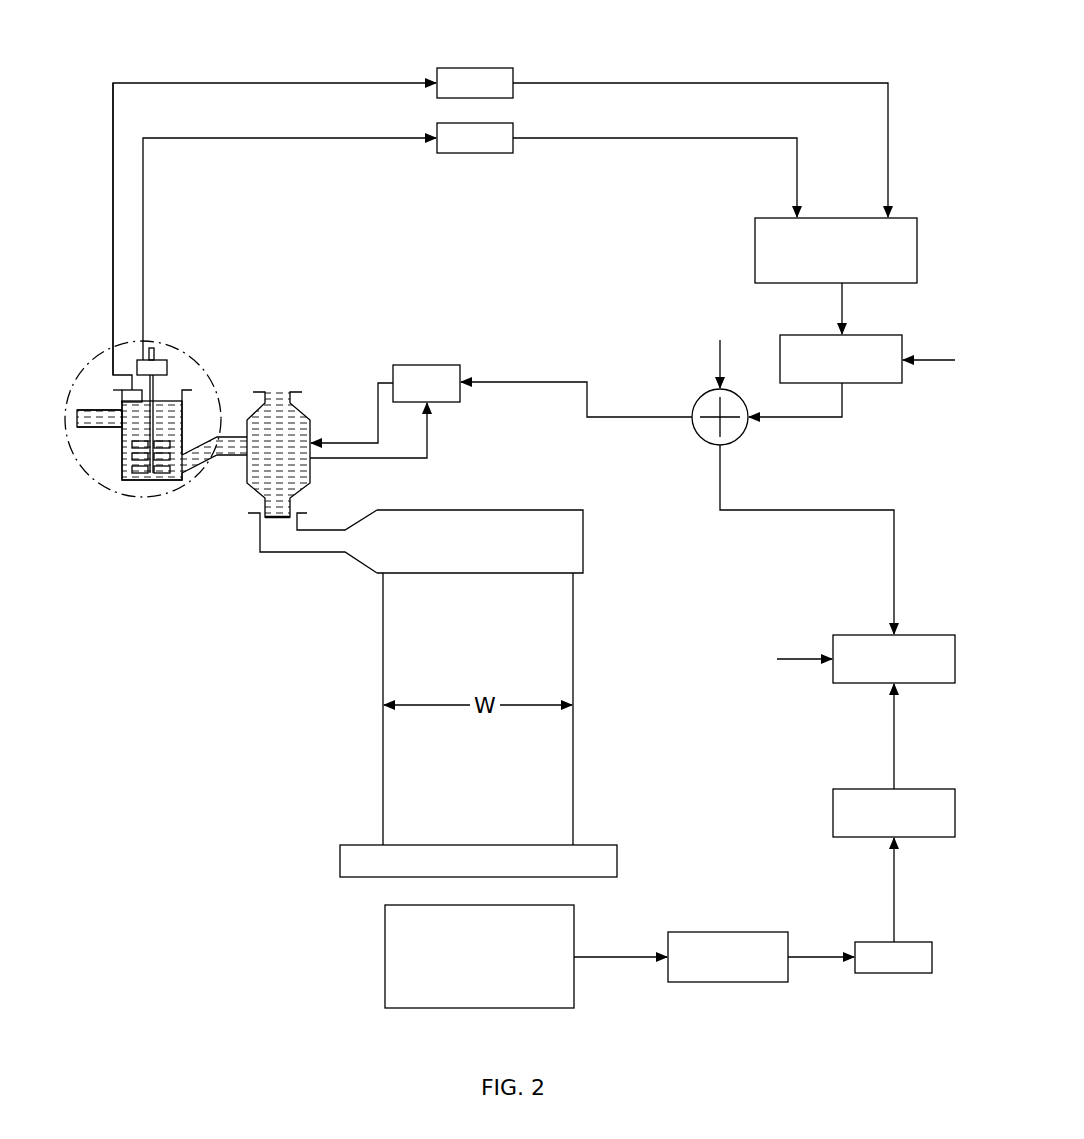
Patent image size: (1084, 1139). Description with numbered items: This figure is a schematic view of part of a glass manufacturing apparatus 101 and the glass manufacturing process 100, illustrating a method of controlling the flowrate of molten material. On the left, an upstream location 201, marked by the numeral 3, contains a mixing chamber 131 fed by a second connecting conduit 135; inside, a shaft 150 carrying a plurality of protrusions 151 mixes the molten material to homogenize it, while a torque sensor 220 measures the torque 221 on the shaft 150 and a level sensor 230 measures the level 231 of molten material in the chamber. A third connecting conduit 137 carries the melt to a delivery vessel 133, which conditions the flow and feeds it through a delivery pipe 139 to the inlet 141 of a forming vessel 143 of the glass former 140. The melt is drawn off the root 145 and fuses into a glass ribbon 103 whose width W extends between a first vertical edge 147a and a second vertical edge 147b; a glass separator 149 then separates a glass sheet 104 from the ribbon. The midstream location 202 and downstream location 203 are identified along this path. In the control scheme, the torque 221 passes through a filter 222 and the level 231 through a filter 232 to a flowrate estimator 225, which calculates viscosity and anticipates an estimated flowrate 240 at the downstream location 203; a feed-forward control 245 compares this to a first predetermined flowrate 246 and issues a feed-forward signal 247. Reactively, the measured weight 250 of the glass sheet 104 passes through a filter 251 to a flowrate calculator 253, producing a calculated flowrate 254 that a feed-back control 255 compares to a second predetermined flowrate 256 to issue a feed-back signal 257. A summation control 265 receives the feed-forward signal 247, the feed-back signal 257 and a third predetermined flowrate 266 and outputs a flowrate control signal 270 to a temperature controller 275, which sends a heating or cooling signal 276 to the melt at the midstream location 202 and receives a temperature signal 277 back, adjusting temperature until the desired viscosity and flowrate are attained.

The portion of the upstream location 3 is at (158, 505).
The glass manufacturing process 100 is at (407, 335).
The glass manufacturing apparatus 101 is at (295, 335).
The glass ribbon 103 is at (450, 577).
The glass sheet 104 is at (385, 957).
The mixing chamber 131 is at (205, 397).
The delivery vessel 133 is at (310, 426).
The second connecting conduit 135 is at (97, 430).
The third connecting conduit 137 is at (193, 473).
The delivery pipe 139 is at (290, 510).
The glass former 140 is at (520, 477).
The inlet 141 is at (260, 527).
The forming vessel 143 is at (398, 507).
The root 145 is at (512, 568).
The first vertical edge 147a is at (383, 657).
The second vertical edge 147b is at (573, 657).
The glass separator 149 is at (617, 858).
The shaft 150 is at (188, 378).
The protrusions 151 is at (145, 473).
The upstream location 201 is at (110, 500).
The midstream location 202 is at (215, 550).
The downstream location 203 is at (347, 567).
The torque sensor 220 is at (160, 360).
The torque 221 is at (290, 140).
The filter 222 is at (480, 155).
The flowrate estimator 225 is at (768, 242).
The level sensor 230 is at (128, 374).
The level 231 is at (303, 80).
The filter 232 is at (485, 68).
The estimated flowrate 240 is at (838, 310).
The feed-forward control 245 is at (875, 373).
The first predetermined flowrate 246 is at (940, 360).
The feed-forward signal 247 is at (798, 418).
The measured weight 250 is at (735, 942).
The filter 251 is at (915, 945).
The flowrate calculator 253 is at (843, 808).
The calculated flowrate 254 is at (893, 742).
The feed-back control 255 is at (920, 636).
The second predetermined flowrate 256 is at (795, 658).
The feed-back signal 257 is at (795, 512).
The summation control 265 is at (706, 394).
The third predetermined flowrate 266 is at (718, 345).
The flowrate control signal 270 is at (548, 380).
The temperature controller 275 is at (445, 375).
The heating or cooling signal 276 is at (378, 383).
The temperature signal 277 is at (427, 445).